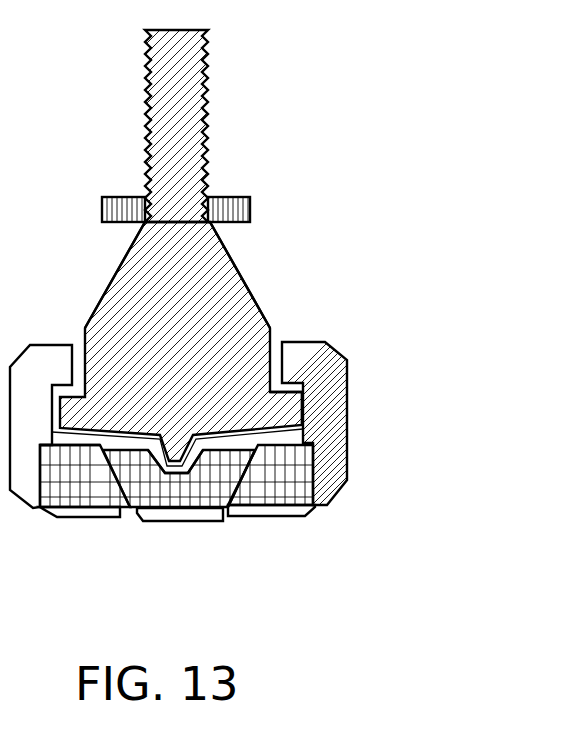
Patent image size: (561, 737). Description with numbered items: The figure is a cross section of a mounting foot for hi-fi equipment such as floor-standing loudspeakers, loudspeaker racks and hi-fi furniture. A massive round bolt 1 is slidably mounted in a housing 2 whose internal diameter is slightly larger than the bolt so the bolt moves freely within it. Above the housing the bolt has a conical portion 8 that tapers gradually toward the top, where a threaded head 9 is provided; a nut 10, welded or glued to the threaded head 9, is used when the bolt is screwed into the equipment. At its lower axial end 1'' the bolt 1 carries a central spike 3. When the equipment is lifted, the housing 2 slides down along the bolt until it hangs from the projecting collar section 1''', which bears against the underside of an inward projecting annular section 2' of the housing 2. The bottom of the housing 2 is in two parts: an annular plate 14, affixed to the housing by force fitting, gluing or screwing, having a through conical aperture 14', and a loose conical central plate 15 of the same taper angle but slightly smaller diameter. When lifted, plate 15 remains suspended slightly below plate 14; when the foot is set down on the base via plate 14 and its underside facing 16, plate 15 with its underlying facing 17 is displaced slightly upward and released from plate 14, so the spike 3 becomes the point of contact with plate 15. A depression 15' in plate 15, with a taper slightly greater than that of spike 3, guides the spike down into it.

The bolt 1 is at (236, 341).
The axial end of bolt 1'' is at (60, 510).
The projecting collar section of bolt 1''' is at (299, 495).
The housing 2 is at (359, 423).
The inward projecting annular section 2' is at (37, 373).
The spike 3 is at (185, 508).
The conical portion of bolt 8 is at (252, 271).
The threaded head 9 is at (180, 90).
The nut 10 is at (250, 195).
The annular plate 14 is at (182, 495).
The conical aperture 14' is at (80, 560).
The central plate 15 is at (175, 539).
The depression 15' is at (256, 524).
The facing 16 is at (105, 505).
The facing 17 is at (153, 522).